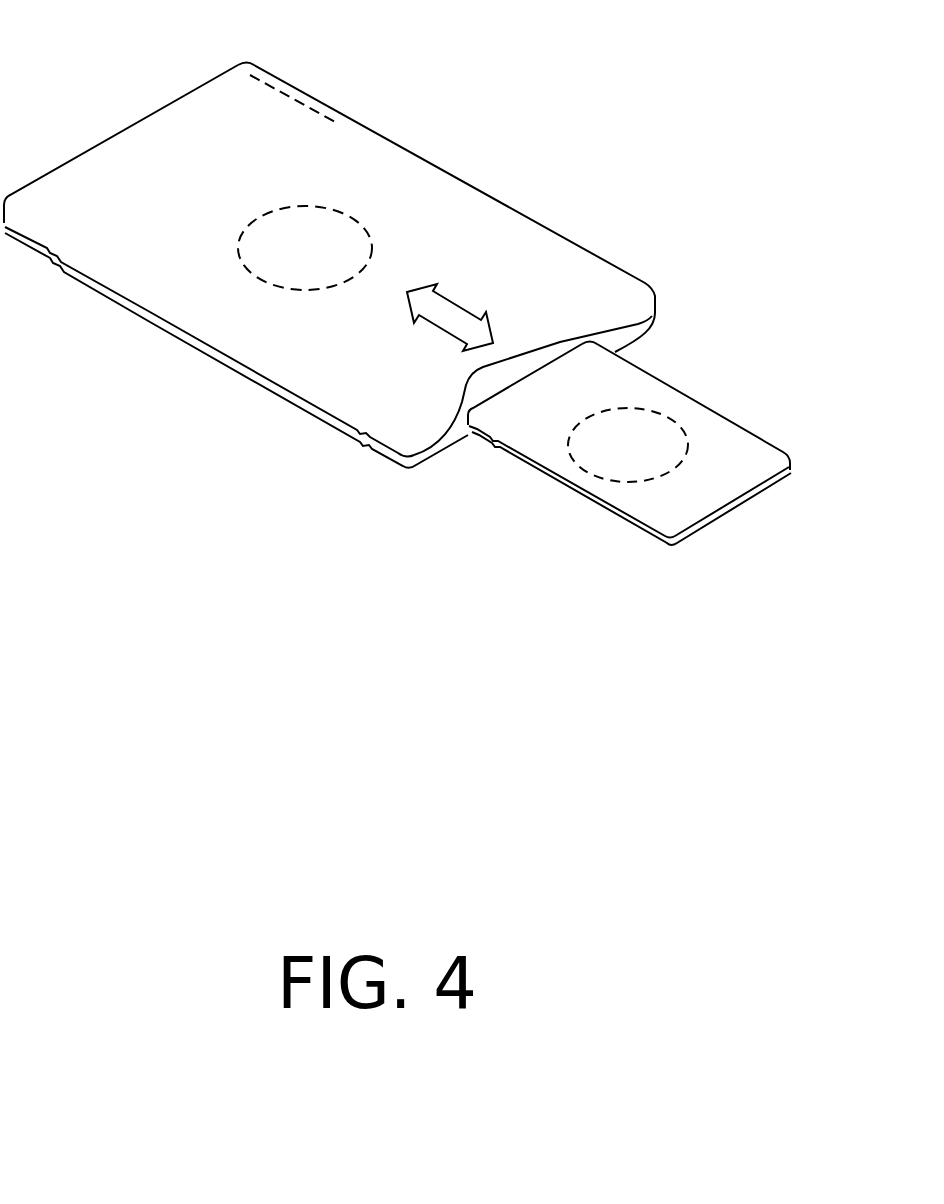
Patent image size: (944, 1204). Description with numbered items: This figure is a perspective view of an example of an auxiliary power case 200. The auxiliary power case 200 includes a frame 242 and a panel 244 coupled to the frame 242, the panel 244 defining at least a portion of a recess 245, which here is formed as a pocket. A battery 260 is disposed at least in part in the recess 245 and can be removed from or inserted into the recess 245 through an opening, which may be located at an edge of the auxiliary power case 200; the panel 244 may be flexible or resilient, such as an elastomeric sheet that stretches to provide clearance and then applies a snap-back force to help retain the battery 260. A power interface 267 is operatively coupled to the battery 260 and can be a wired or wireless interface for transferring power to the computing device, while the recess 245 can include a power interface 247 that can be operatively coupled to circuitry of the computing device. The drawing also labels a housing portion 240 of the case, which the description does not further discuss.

The auxiliary power case 200 is at (523, 103).
The first housing portion 240 is at (543, 240).
The frame 242 is at (303, 110).
The panel 244 is at (152, 134).
The recess 245 is at (455, 428).
The power interface 247 is at (323, 207).
The battery 260 is at (663, 405).
The power interface 267 is at (681, 452).